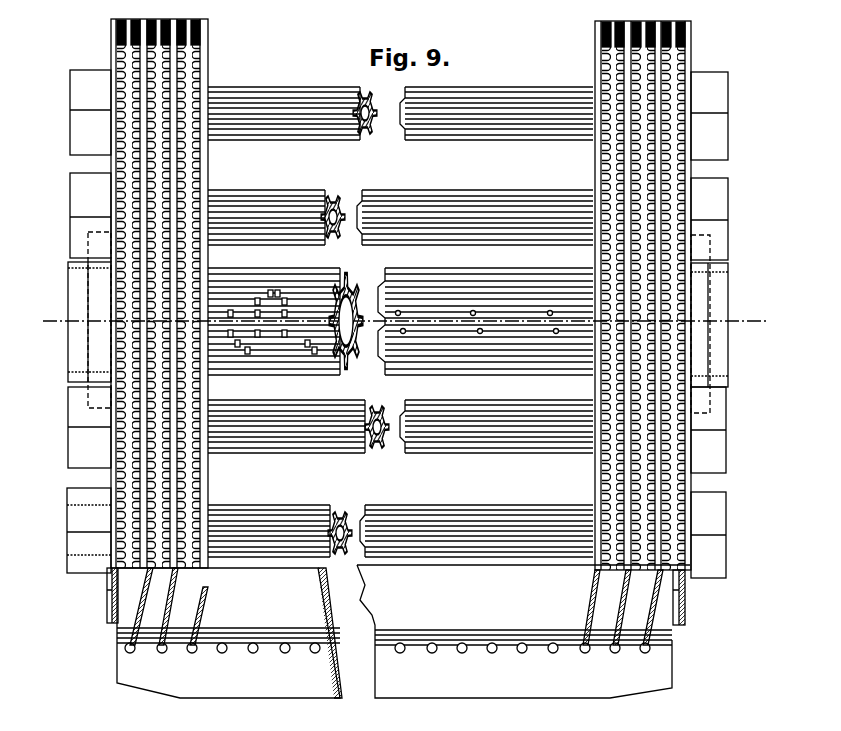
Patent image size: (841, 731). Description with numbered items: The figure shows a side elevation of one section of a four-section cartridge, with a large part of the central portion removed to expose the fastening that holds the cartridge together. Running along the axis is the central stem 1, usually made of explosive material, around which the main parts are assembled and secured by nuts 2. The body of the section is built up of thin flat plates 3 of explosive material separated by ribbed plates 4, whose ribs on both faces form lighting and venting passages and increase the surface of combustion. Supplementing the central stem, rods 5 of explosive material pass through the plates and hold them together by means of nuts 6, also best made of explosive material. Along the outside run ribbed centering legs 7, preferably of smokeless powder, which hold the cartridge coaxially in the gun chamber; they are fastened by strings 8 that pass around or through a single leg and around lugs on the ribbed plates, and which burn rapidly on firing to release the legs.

The central stem 1 is at (478, 272).
The nuts 2 is at (68, 298).
The thin flat plates 3 is at (693, 64).
The ribbed plates 4 is at (190, 22).
The rods 5 is at (268, 87).
The nuts 6 is at (72, 577).
The centering legs 7 is at (340, 680).
The strings 8 is at (175, 581).